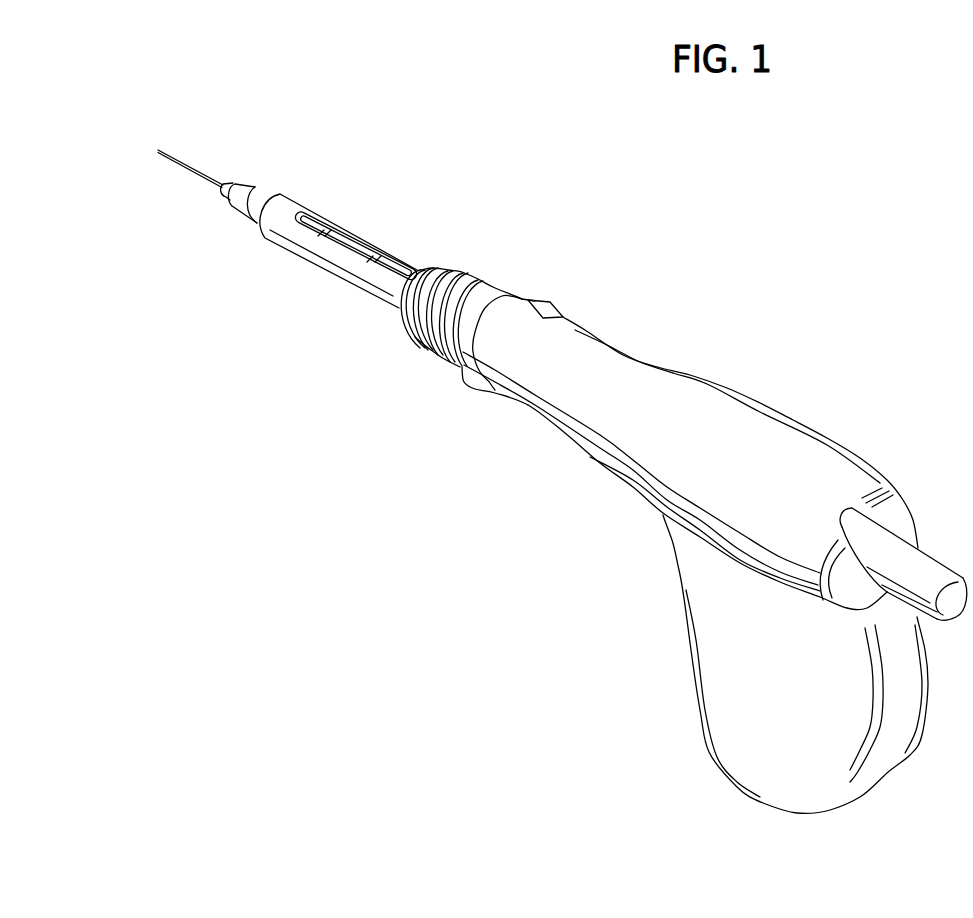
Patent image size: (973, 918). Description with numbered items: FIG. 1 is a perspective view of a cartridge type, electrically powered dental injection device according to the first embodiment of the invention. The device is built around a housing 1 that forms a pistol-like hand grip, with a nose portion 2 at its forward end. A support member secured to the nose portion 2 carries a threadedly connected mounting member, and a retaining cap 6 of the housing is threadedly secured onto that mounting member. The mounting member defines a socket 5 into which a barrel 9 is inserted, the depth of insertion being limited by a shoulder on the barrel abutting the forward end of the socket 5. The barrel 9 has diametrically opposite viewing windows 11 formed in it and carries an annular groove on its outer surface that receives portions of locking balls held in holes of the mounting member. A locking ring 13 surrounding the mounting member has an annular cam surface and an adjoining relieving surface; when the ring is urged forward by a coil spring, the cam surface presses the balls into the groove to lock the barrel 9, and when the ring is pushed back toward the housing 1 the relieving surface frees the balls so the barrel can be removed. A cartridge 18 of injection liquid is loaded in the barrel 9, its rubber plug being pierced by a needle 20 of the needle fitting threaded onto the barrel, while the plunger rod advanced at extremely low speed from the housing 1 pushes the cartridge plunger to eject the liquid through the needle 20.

The housing 1 is at (643, 442).
The nose portion 2 is at (520, 373).
The socket 5 is at (420, 270).
The retaining cap 6 is at (503, 298).
The barrel 9 is at (297, 242).
The viewing windows 11 is at (350, 238).
The locking ring 13 is at (440, 280).
The cartridge 18 is at (392, 265).
The needle 20 is at (258, 198).